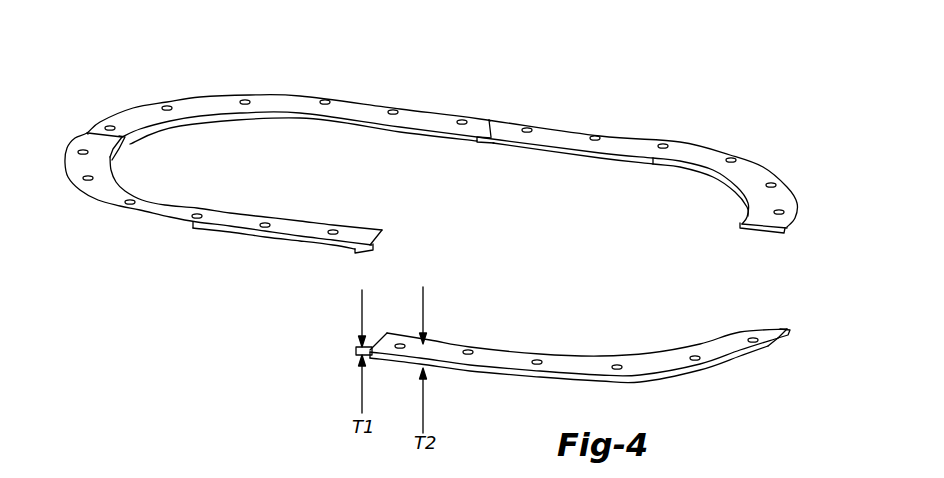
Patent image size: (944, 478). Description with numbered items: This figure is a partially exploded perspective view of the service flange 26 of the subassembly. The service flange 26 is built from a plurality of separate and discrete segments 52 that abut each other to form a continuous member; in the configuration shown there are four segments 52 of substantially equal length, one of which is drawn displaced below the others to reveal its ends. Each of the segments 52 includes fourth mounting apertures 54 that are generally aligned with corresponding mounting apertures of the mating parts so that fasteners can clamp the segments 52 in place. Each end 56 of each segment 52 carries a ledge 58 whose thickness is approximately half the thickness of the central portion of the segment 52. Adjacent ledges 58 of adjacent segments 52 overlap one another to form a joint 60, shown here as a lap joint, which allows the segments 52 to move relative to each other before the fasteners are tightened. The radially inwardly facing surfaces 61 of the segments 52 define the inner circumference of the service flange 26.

The service flange 26 is at (552, 94).
The segments 52 is at (223, 100).
The fourth mounting apertures 54 is at (393, 112).
The end 56 is at (76, 141).
The ledge 58 is at (116, 160).
The joint 60 is at (86, 124).
The radially inwardly facing surfaces 61 is at (273, 114).